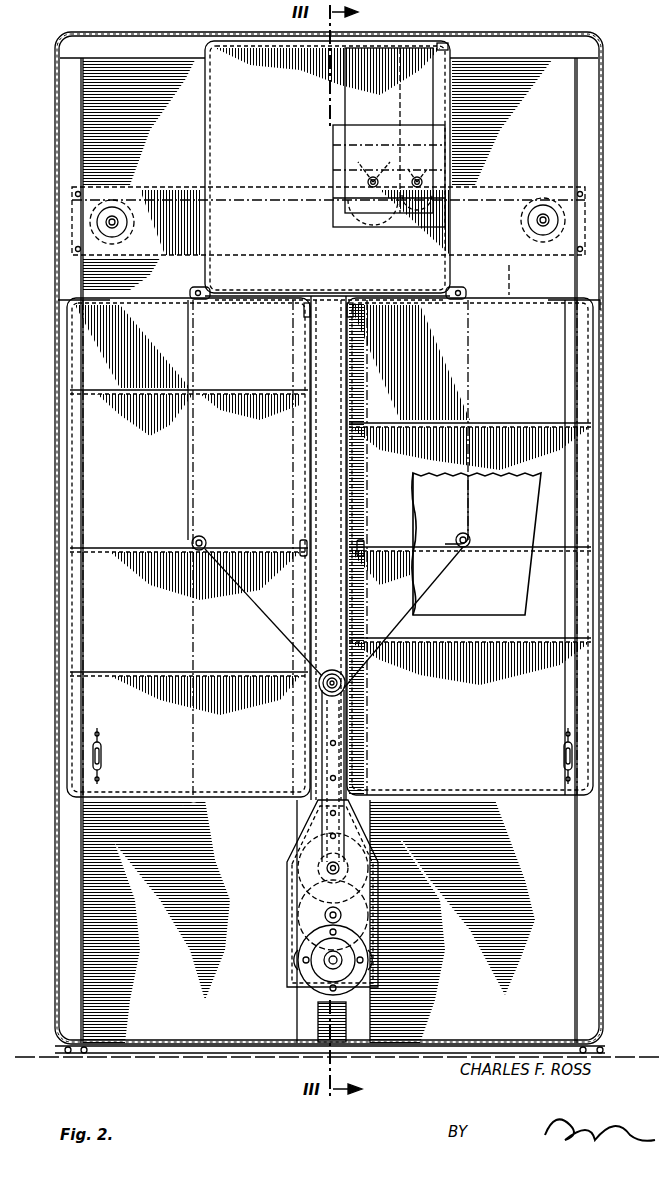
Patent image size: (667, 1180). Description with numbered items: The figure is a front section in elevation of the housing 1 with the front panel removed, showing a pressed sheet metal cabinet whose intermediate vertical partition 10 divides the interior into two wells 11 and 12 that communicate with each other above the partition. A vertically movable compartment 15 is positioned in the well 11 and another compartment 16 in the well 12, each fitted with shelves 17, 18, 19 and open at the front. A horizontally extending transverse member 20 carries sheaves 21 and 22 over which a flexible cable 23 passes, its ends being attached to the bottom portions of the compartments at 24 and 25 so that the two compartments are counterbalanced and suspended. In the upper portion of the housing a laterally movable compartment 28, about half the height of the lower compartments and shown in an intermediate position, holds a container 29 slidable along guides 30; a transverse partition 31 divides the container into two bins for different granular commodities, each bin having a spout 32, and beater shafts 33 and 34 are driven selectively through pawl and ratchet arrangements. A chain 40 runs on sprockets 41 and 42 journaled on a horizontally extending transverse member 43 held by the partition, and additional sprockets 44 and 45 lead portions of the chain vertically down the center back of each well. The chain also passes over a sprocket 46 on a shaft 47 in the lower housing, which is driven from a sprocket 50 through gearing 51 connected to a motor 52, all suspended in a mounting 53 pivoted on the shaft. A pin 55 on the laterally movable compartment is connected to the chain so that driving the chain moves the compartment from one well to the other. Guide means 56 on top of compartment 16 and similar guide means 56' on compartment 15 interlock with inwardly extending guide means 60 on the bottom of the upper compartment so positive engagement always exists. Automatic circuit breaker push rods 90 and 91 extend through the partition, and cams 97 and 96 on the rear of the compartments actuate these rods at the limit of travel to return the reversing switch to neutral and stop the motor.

The housing 1 is at (608, 497).
The intermediate vertical partition 10 is at (338, 477).
The well 11 is at (228, 1013).
The well 12 is at (457, 1013).
The compartment 15 is at (152, 787).
The compartment 16 is at (458, 787).
The shelf 17 is at (144, 670).
The shelf 18 is at (128, 547).
The shelf 19 is at (124, 388).
The horizontally extending transverse member 20 is at (562, 187).
The sheave 21 is at (135, 222).
The sheave 22 is at (532, 196).
The flexible cable 23 is at (578, 264).
The cable attachment point 24 is at (92, 766).
The cable attachment point 25 is at (575, 762).
The laterally movable compartment 28 is at (203, 144).
The container 29 is at (390, 60).
The guides 30 is at (444, 44).
The transverse partition 31 is at (399, 98).
The spout 32 is at (376, 214).
The shaft 33 is at (373, 185).
The shaft 34 is at (417, 180).
The chain 40 is at (252, 618).
The sprocket 41 is at (193, 288).
The sprocket 42 is at (460, 288).
The horizontally extending transverse member 43 is at (200, 474).
The sprocket 44 is at (203, 536).
The sprocket 45 is at (466, 548).
The sprocket 46 is at (346, 680).
The shaft 47 is at (345, 695).
The sprocket 50 is at (320, 866).
The gearing 51 is at (293, 880).
The motor 52 is at (300, 945).
The mounting 53 is at (296, 908).
The pin 55 is at (325, 292).
The laterally extending guide means 56 is at (592, 293).
The laterally extending guide means 56' is at (66, 286).
The inwardly extending guide means 60 is at (412, 294).
The automatic circuit breaker push rod 90 is at (305, 316).
The automatic circuit breaker push rod 91 is at (352, 318).
The cam 96 is at (364, 545).
The cam 97 is at (300, 540).